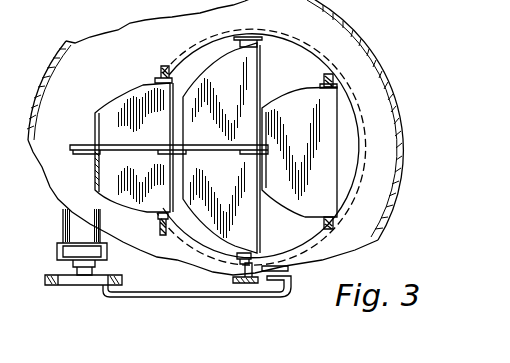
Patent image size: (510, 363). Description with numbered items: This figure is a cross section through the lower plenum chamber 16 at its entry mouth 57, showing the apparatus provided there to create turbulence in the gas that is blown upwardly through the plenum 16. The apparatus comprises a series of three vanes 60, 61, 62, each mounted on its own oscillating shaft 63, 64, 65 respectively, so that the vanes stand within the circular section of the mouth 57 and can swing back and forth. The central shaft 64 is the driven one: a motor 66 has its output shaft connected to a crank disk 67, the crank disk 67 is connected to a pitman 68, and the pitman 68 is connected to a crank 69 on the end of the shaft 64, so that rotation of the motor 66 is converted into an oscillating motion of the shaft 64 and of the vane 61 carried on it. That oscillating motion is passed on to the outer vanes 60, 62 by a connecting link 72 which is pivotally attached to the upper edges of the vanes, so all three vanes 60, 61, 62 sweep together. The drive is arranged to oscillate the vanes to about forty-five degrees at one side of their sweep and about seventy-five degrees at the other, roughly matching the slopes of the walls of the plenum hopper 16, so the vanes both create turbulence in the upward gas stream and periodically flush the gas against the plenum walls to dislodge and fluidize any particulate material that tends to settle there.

The lower plenum chamber 16 is at (378, 108).
The entry mouth 57 is at (368, 153).
The vane 60 is at (293, 110).
The vane 61 is at (220, 72).
The vane 62 is at (127, 107).
The oscillating shaft 63 is at (335, 78).
The oscillating shaft 64 is at (288, 271).
The oscillating shaft 65 is at (160, 78).
The motor 66 is at (73, 226).
The crank disk 67 is at (67, 284).
The pitman 68 is at (197, 295).
The crank 69 is at (272, 280).
The connecting link 72 is at (87, 146).